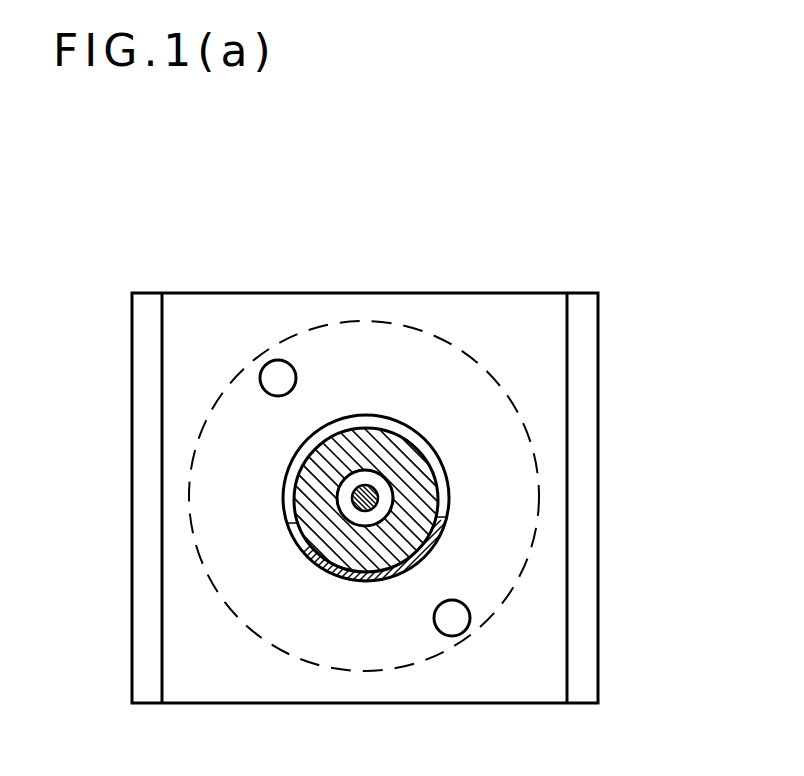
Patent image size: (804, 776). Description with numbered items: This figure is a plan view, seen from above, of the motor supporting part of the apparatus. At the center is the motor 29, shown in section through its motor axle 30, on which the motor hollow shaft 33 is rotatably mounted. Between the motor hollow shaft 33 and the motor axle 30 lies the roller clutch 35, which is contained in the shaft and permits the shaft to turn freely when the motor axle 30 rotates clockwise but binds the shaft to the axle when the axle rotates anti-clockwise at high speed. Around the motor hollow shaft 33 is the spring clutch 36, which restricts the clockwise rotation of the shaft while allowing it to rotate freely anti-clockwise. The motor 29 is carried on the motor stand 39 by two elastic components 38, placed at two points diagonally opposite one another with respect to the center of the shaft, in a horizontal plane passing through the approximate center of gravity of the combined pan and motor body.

The motor 29 is at (505, 522).
The motor axle 30 is at (362, 560).
The motor hollow shaft 33 is at (410, 467).
The roller clutch 35 is at (378, 517).
The spring clutch 36 is at (302, 567).
The elastic components 38 is at (285, 365).
The motor stand 39 is at (537, 367).